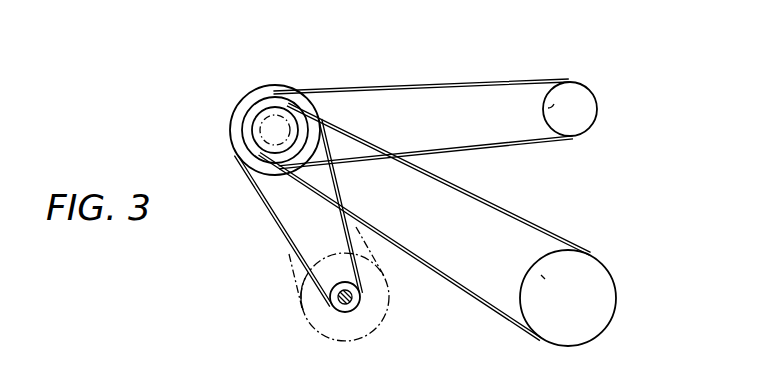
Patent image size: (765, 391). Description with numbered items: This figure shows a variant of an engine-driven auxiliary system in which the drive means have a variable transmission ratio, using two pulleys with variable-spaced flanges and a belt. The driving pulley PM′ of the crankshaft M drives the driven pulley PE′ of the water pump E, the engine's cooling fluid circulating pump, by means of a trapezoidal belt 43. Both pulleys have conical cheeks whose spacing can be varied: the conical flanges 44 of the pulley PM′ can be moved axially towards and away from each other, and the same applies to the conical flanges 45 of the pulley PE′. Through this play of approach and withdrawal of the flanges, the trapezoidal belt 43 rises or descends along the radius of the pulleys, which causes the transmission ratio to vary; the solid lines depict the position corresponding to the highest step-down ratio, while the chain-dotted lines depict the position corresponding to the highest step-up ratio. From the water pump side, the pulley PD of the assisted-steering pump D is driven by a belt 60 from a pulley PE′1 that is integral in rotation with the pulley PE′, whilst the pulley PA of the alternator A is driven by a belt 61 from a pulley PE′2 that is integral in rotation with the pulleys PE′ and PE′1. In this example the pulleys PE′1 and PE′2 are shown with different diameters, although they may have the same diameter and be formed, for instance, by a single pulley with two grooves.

The water pump E is at (263, 78).
The driven pulley PE′ is at (229, 125).
The pulley PE′1 is at (255, 112).
The pulley PE′2 is at (271, 96).
The conical flanges 45 is at (242, 148).
The trapezoidal belt 43 is at (283, 225).
The crankshaft M is at (331, 302).
The driving pulley PM′ is at (360, 304).
The conical flanges 44 is at (337, 333).
The belt 61 is at (448, 88).
The pulley PA is at (549, 108).
The alternator A is at (604, 109).
The belt 60 is at (529, 222).
The pulley PD is at (543, 277).
The assisted-steering pump D is at (623, 311).